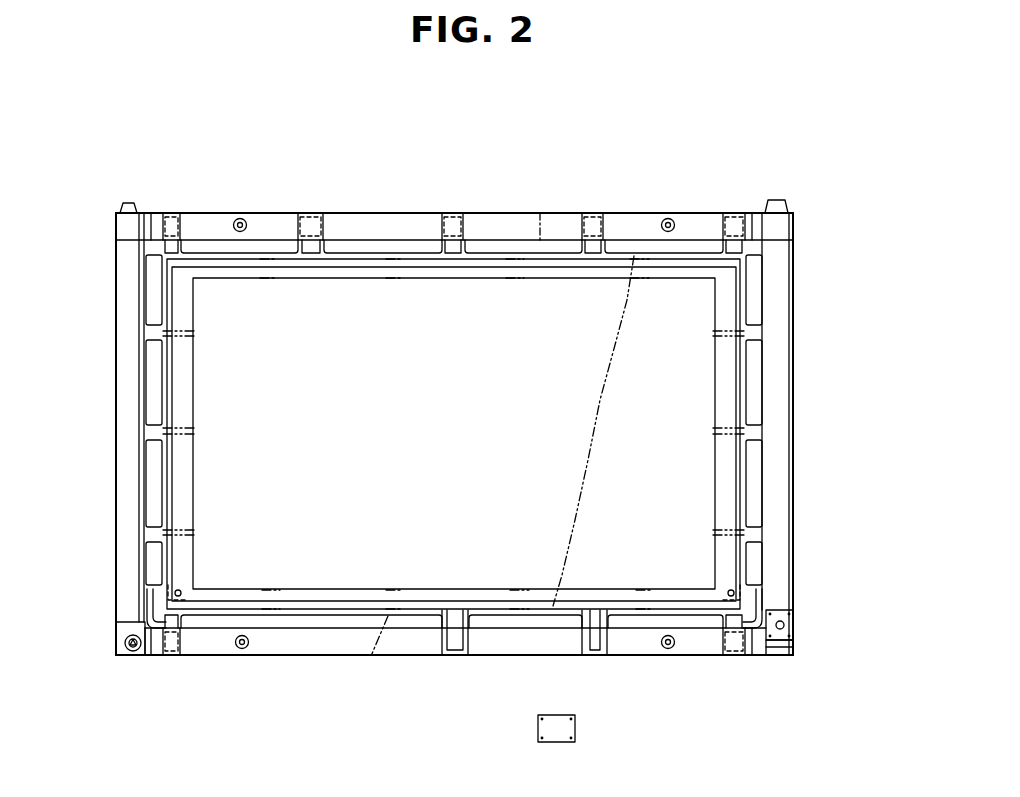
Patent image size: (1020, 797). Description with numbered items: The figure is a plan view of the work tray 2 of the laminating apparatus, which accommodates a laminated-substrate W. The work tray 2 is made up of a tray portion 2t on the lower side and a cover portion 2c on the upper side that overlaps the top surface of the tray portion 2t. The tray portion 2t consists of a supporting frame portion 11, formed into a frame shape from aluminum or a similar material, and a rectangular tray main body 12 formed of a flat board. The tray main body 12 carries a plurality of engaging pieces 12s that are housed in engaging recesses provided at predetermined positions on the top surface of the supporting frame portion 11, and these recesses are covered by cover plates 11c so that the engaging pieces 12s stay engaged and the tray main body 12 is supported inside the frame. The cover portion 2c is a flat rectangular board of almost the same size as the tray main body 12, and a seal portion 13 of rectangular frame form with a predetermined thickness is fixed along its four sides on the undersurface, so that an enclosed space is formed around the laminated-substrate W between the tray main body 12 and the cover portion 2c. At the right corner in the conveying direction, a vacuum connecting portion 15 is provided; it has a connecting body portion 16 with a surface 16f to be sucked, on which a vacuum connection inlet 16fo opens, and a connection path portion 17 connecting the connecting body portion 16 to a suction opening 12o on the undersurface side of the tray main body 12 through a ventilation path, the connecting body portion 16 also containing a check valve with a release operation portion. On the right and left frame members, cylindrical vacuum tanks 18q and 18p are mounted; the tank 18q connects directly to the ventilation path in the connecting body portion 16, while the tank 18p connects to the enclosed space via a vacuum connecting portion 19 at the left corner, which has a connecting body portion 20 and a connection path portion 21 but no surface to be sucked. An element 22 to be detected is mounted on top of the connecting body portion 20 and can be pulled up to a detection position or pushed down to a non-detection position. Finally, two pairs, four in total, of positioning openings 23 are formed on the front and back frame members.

The work tray 2 is at (681, 146).
The tray portion 2t is at (568, 205).
The cover portion 2c is at (540, 237).
The supporting frame portion 11 is at (642, 212).
The cover plate 11c is at (322, 252).
The tray main body 12 is at (266, 252).
The suction opening 12o is at (728, 591).
The engaging piece 12s is at (172, 212).
The seal portion 13 is at (743, 462).
The vacuum connecting portion 15 is at (818, 605).
The connecting body portion 16 is at (796, 636).
The surface to be sucked 16f is at (795, 624).
The vacuum connection inlet 16fo is at (783, 656).
The connection path portion 17 is at (762, 578).
The vacuum tank 18p is at (117, 473).
The vacuum tank 18q is at (795, 427).
The vacuum connecting portion 19 is at (108, 662).
The connecting body portion 20 is at (117, 637).
The connection path portion 21 is at (152, 578).
The element to be detected 22 is at (137, 652).
The positioning opening 23 is at (240, 218).
The laminated-substrate W is at (377, 278).